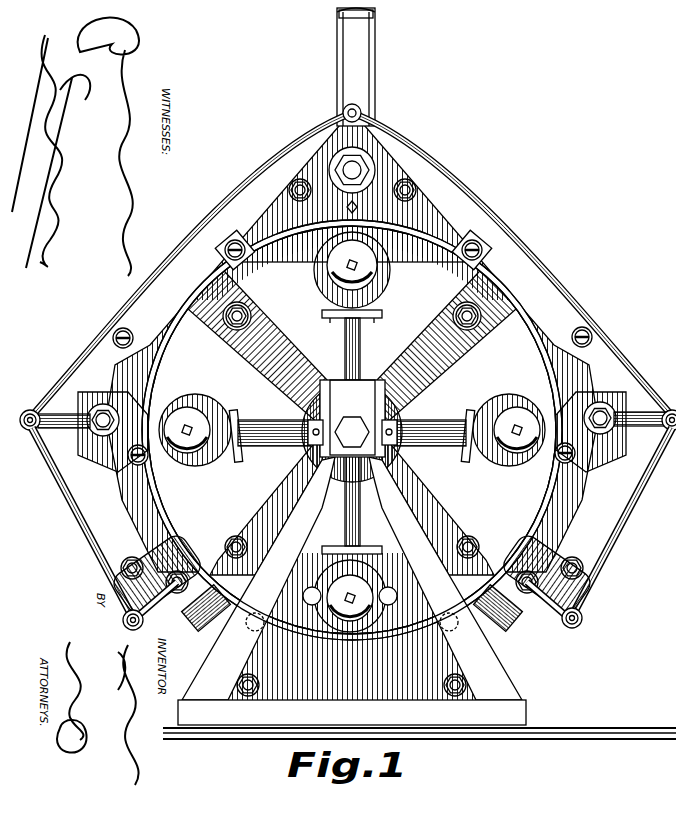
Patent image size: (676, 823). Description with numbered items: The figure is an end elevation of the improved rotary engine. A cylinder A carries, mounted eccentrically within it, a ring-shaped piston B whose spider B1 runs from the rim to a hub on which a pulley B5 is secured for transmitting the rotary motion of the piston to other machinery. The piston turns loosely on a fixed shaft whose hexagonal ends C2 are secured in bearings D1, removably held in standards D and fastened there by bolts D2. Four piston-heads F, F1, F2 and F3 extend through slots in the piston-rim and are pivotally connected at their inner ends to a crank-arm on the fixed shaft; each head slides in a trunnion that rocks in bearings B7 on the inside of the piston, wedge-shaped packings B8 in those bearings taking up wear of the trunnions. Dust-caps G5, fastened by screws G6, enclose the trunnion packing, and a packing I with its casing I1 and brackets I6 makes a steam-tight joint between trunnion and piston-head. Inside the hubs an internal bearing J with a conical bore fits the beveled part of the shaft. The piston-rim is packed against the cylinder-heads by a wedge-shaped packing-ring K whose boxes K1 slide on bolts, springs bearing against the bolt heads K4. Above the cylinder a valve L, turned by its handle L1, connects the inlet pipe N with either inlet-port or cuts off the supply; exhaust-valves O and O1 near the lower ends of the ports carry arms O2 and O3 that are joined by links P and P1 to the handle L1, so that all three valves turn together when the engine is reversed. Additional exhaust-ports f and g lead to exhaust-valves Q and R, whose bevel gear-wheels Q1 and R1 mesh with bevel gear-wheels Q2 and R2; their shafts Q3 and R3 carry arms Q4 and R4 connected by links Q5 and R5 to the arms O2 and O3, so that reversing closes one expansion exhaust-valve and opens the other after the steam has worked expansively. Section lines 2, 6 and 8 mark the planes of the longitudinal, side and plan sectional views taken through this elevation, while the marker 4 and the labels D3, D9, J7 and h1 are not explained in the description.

The cylinder A is at (478, 202).
The piston B is at (352, 450).
The spider B1 is at (478, 372).
The pulley B5 is at (328, 266).
The bearings B7 is at (377, 292).
The wedge-shaped packings B8 is at (232, 300).
The hexagonal ends C2 is at (354, 440).
The standards D is at (520, 668).
The bearings D1 is at (352, 418).
The bolts D2 is at (368, 378).
The side bracket D3 is at (312, 426).
The pin D9 is at (388, 428).
The piston-head F is at (362, 348).
The piston-head F1 is at (420, 448).
The piston-head F2 is at (345, 528).
The piston-head F3 is at (290, 447).
The dust-cap G5 is at (342, 276).
The screw G6 is at (189, 434).
The packing I is at (502, 470).
The casing I1 is at (383, 312).
The brackets I6 is at (350, 318).
The internal bearing J is at (665, 454).
The bracket J7 is at (388, 448).
The packing-ring K is at (182, 330).
The boxes K1 is at (237, 242).
The bolt head K4 is at (490, 232).
The valve L is at (372, 166).
The handle L1 is at (366, 82).
The inlet pipe N is at (376, 22).
The exhaust-valve O is at (600, 402).
The exhaust-valve O1 is at (104, 404).
The arm O2 is at (656, 404).
The arm O3 is at (58, 412).
The link P is at (570, 322).
The link P1 is at (116, 334).
The exhaust-valve Q is at (516, 616).
The bevel gear-wheel Q1 is at (500, 562).
The bevel gear-wheel Q2 is at (515, 568).
The shaft Q3 is at (540, 566).
The arm Q4 is at (554, 605).
The link Q5 is at (620, 540).
The exhaust-valve R is at (178, 618).
The bevel gear-wheel R1 is at (192, 576).
The bevel gear-wheel R2 is at (178, 590).
The shaft R3 is at (156, 574).
The arm R4 is at (142, 613).
The link R5 is at (84, 528).
The exhaust-port f is at (480, 622).
The exhaust-port g is at (252, 630).
The screw h1 is at (136, 466).
The section line 2 is at (352, 100).
The section line 4 is at (170, 642).
The section line 6 is at (215, 213).
The section line 8 is at (268, 305).